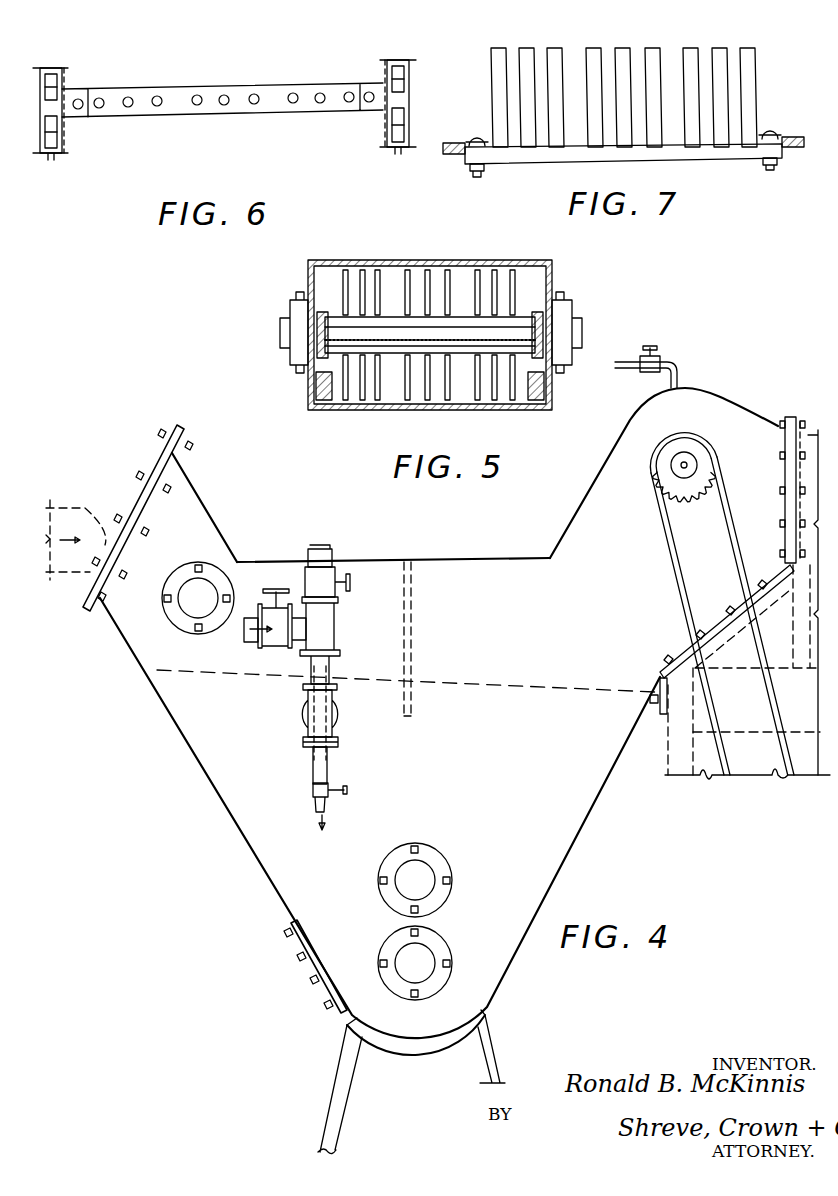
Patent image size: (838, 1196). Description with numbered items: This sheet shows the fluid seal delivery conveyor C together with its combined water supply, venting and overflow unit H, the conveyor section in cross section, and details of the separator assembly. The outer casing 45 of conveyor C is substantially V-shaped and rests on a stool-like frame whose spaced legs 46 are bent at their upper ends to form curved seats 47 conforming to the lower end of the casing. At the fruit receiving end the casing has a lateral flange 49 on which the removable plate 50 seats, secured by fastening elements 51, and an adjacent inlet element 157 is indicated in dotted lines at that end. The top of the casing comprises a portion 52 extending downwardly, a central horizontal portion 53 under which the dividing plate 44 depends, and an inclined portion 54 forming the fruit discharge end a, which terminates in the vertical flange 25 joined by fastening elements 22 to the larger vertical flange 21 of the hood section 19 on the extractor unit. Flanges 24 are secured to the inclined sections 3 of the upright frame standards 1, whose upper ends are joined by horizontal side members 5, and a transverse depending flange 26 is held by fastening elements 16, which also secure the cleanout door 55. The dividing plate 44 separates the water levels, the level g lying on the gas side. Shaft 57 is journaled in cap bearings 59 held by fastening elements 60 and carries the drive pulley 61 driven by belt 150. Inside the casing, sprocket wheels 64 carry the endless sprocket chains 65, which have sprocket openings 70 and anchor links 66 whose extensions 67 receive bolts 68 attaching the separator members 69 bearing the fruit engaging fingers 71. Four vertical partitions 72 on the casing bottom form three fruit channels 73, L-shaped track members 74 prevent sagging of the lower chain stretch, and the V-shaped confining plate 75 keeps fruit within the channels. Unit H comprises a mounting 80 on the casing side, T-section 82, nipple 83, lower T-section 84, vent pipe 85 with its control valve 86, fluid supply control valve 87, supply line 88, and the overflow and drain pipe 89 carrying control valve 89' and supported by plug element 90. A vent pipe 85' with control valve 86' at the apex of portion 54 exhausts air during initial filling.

In FIG. 4, the upright frame standards 1 is at (677, 758).
In FIG. 4, the upwardly and inwardly extending sections 3 is at (730, 630).
In FIG. 4, the horizontal side members 5 is at (735, 735).
In FIG. 4, the fastening elements 16 is at (668, 655).
In FIG. 4, the hood section 19 is at (252, 884).
In FIG. 4, the vertical flanges 21 is at (802, 412).
In FIG. 4, the fastening elements 22 is at (780, 492).
In FIG. 4, the flanges 24 is at (720, 620).
In FIG. 4, the complemental vertical flange 25 is at (785, 426).
In FIG. 4, the transverse depending flange 26 is at (661, 712).
In FIG. 4, the dividing plate 44 is at (413, 646).
In FIG. 5, the outer casing 45 is at (428, 262).
In FIG. 4, the outer casing 45 is at (452, 577).
In FIG. 4, the legs 46 is at (340, 1100).
In FIG. 4, the curved seats 47 is at (445, 1045).
In FIG. 4, the lateral flange 49 is at (178, 457).
In FIG. 4, the removable plate 50 is at (160, 460).
In FIG. 4, the fastening elements 51 is at (82, 597).
In FIG. 4, the top portion 52 is at (205, 512).
In FIG. 4, the central horizontal portion 53 is at (390, 560).
In FIG. 4, the inclined portion 54 is at (606, 450).
In FIG. 4, the cleanout door 55 is at (292, 950).
In FIG. 5, the shaft 57 is at (390, 330).
In FIG. 4, the shaft 57 is at (686, 464).
In FIG. 5, the cap bearings 59 is at (289, 345).
In FIG. 4, the cap bearings 59 is at (212, 572).
In FIG. 4, the fastening elements 60 is at (164, 598).
In FIG. 4, the drive pulley or sprocket 61 is at (665, 480).
In FIG. 5, the sprocket wheels 64 is at (318, 327).
In FIG. 6, the endless sprocket chains 65 is at (58, 78).
In FIG. 6, the anchor links 66 is at (402, 90).
In FIG. 6, the extensions 67 is at (366, 82).
In FIG. 7, the extensions 67 is at (797, 148).
In FIG. 6, the bolts 68 is at (79, 108).
In FIG. 7, the bolts 68 is at (477, 178).
In FIG. 6, the separator members 69 is at (170, 93).
In FIG. 7, the separator members 69 is at (720, 154).
In FIG. 6, the sprocket openings 70 is at (398, 124).
In FIG. 7, the sprocket openings 70 is at (450, 143).
In FIG. 5, the sprocket openings 70 is at (532, 312).
In FIG. 6, the fruit engaging fingers 71 is at (295, 97).
In FIG. 7, the fruit engaging fingers 71 is at (620, 48).
In FIG. 5, the fruit engaging fingers 71 is at (342, 298).
In FIG. 5, the vertical partitions 72 is at (318, 386).
In FIG. 5, the fruit channels 73 is at (352, 398).
In FIG. 5, the track members 74 is at (326, 400).
In FIG. 5, the confining plate 75 is at (460, 340).
In FIG. 4, the mounting 80 is at (335, 708).
In FIG. 4, the T-section 82 is at (303, 740).
In FIG. 4, the nipple 83 is at (303, 680).
In FIG. 4, the lower T-section 84 is at (334, 620).
In FIG. 4, the vent pipe 85 is at (321, 530).
In FIG. 4, the vent pipe 85' is at (669, 374).
In FIG. 4, the vent pipe control valve 86 is at (345, 582).
In FIG. 4, the control valve 86' is at (668, 350).
In FIG. 4, the water supply control valve 87 is at (276, 589).
In FIG. 4, the water supply line 88 is at (248, 634).
In FIG. 4, the overflow and drain pipe 89 is at (344, 800).
In FIG. 4, the control valve 89' is at (362, 805).
In FIG. 4, the plug element 90 is at (338, 746).
In FIG. 4, the belt 150 is at (676, 592).
In FIG. 4, the inlet duct 157 is at (77, 505).
In FIG. 4, the water supply, venting and overflow unit H is at (392, 655).
In FIG. 4, the fruit discharge end a is at (722, 398).
In FIG. 4, the water level g is at (515, 690).
In FIG. 4, the fluid seal delivery conveyor C is at (588, 818).